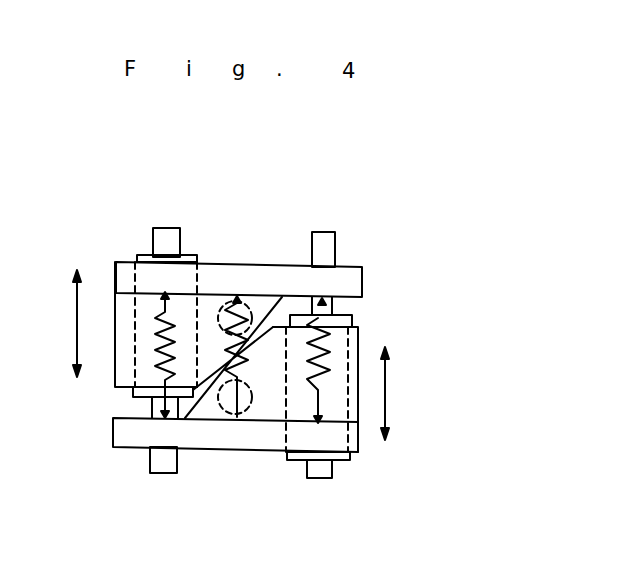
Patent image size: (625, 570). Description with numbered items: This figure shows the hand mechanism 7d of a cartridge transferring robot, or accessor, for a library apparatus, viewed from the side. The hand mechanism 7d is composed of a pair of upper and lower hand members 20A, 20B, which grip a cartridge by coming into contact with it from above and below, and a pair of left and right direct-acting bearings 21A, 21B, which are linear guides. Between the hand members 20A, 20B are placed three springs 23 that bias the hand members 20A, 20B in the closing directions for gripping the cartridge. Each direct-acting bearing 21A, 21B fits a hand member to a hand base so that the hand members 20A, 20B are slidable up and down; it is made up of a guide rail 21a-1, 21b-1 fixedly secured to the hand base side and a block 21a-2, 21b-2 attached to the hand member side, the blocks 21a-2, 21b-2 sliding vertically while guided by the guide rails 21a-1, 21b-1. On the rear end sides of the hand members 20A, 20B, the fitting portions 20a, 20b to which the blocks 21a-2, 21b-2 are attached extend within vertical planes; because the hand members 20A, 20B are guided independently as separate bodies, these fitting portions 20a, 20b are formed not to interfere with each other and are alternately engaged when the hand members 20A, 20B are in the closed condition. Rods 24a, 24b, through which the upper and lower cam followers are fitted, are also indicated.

The hand mechanism 7d is at (383, 268).
The upper hand member 20A is at (353, 267).
The lower hand member 20B is at (263, 440).
The fitting portion 20a is at (118, 361).
The fitting portion 20b is at (355, 348).
The direct-acting bearing 21A is at (134, 239).
The direct-acting bearing 21B is at (346, 232).
The guide rail 21a-1 is at (164, 228).
The block 21a-2 is at (195, 257).
The guide rail 21b-1 is at (321, 232).
The block 21b-2 is at (350, 458).
The spring 23 is at (165, 368).
The rod 24a is at (227, 300).
The rod 24b is at (215, 385).